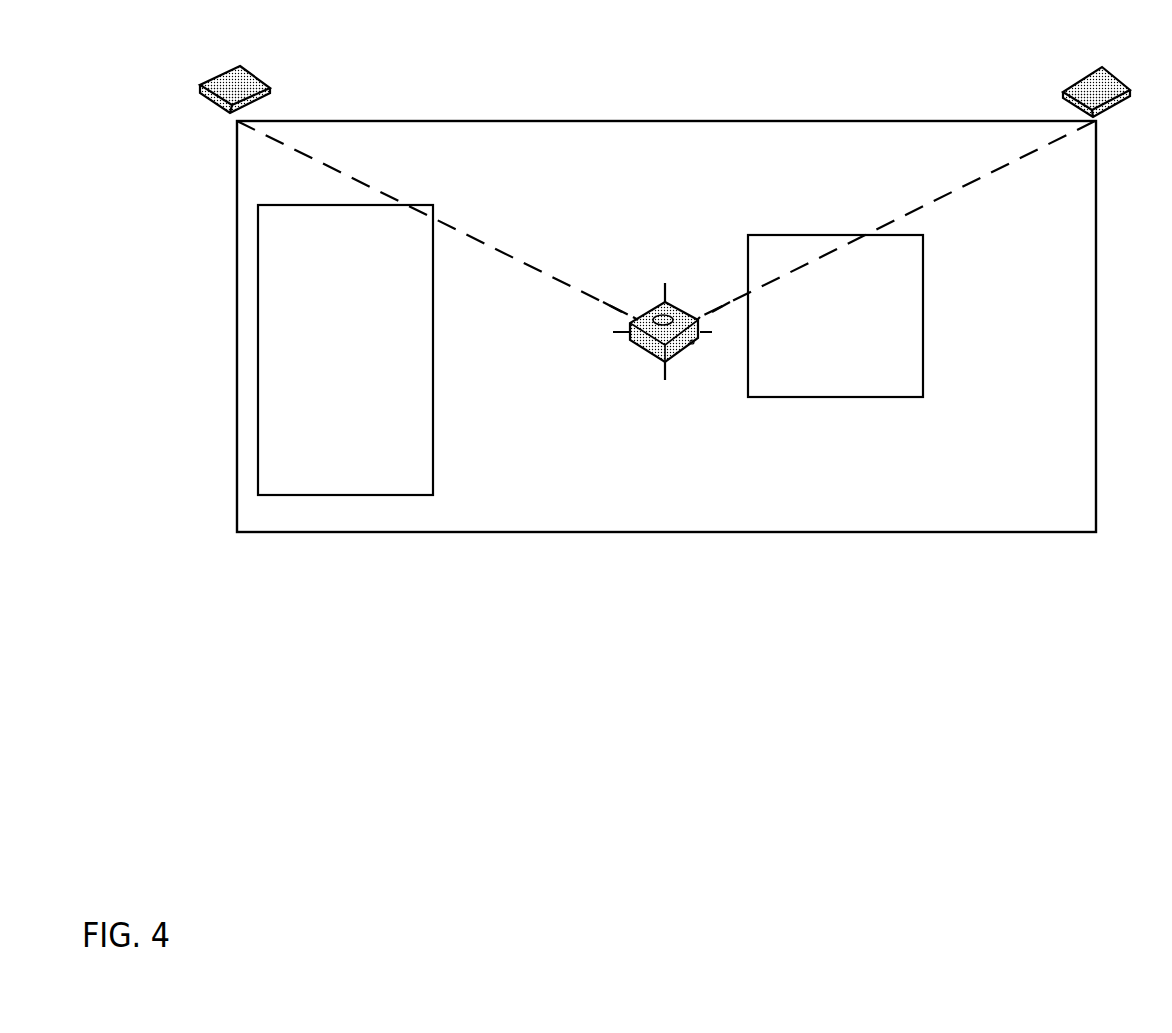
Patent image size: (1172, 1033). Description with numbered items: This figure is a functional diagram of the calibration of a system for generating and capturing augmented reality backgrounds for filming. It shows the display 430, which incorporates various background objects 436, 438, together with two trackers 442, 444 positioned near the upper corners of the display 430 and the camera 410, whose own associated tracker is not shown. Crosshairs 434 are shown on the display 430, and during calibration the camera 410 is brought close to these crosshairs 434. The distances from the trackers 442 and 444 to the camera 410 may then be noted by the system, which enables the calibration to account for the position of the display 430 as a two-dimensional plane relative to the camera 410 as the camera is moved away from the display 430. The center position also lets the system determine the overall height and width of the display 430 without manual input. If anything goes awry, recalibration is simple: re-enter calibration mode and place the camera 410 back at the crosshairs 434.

The display 430 is at (666, 326).
The background object 436 is at (345, 350).
The background object 438 is at (835, 316).
The tracker 442 is at (412, 173).
The tracker 444 is at (926, 174).
The camera 410 is at (662, 350).
The crosshairs 434 is at (665, 283).